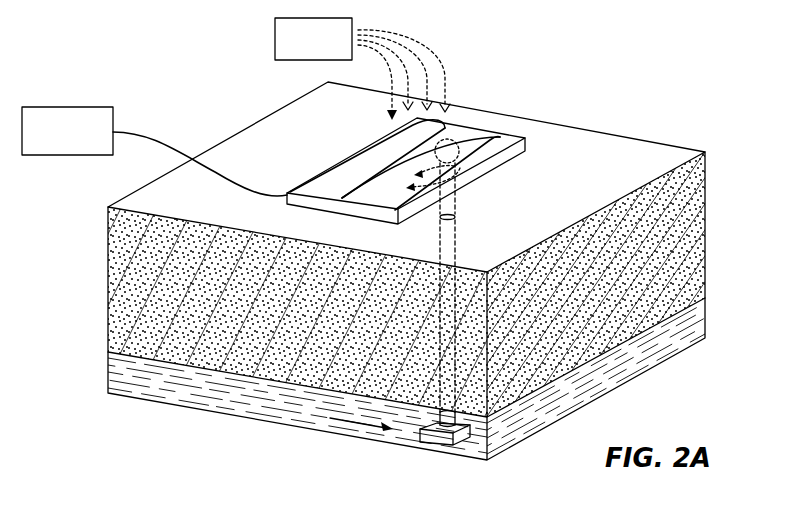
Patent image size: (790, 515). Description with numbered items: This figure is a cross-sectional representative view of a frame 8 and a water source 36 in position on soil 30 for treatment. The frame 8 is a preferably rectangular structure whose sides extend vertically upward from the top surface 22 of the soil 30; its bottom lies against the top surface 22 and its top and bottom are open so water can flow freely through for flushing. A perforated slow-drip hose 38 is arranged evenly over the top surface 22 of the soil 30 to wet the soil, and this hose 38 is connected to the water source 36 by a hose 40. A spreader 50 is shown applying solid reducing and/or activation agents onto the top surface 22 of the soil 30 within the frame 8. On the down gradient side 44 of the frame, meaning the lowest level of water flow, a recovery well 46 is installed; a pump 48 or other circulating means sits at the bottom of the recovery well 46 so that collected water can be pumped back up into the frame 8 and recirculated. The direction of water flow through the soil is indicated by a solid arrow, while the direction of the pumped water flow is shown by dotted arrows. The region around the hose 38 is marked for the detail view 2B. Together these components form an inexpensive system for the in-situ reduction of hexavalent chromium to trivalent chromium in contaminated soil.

The frame 8 is at (378, 132).
The top surface of the soil 22 is at (638, 148).
The soil 30 is at (692, 222).
The water source 36 is at (55, 143).
The hose 38 is at (343, 166).
The hose 40 is at (150, 133).
The down gradient side 44 is at (490, 470).
The recovery well 46 is at (460, 238).
The pump 48 is at (433, 438).
The spreader 50 is at (300, 51).
The detail region of FIG. 2B is at (449, 139).